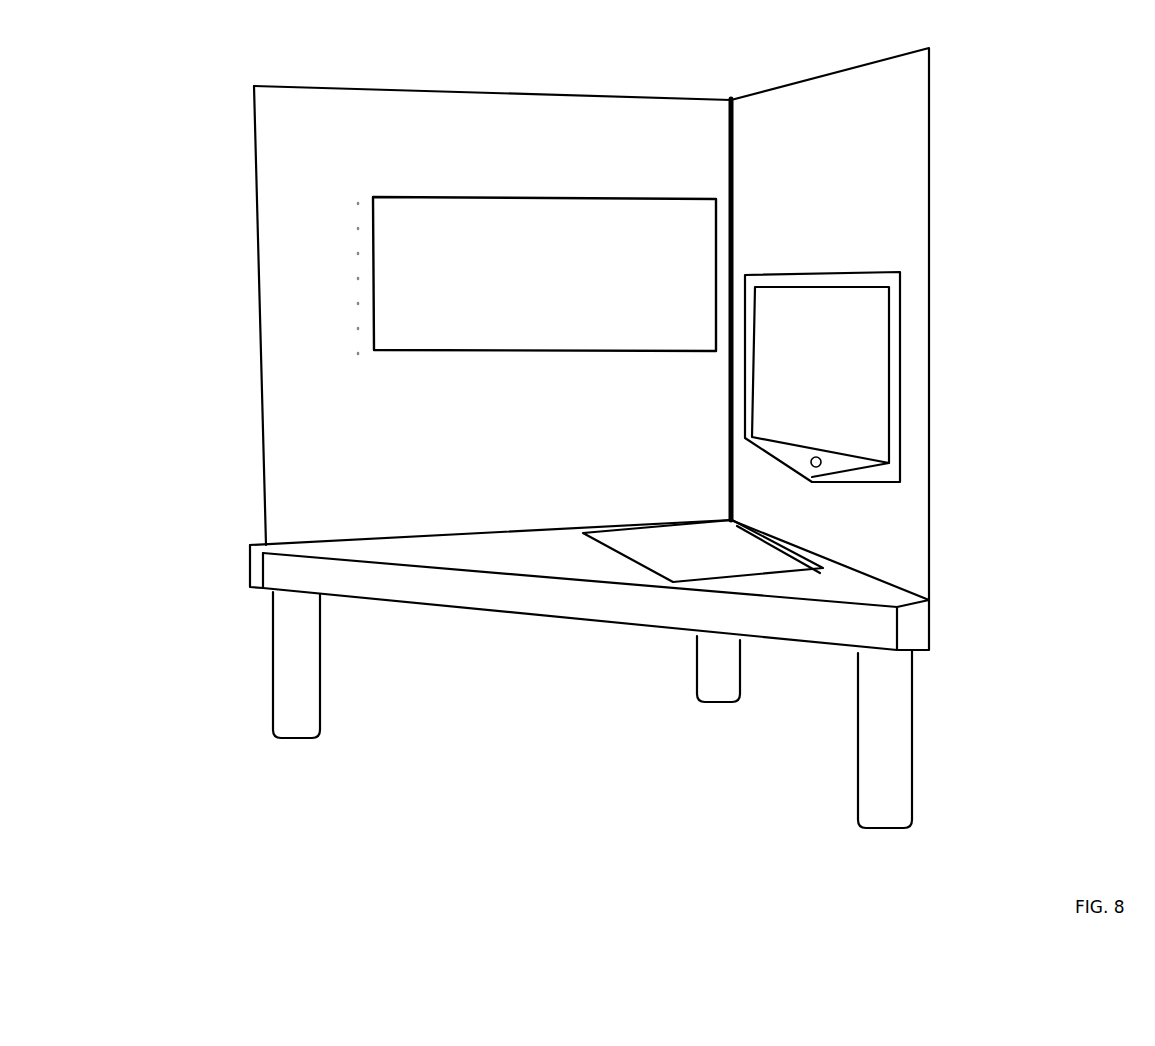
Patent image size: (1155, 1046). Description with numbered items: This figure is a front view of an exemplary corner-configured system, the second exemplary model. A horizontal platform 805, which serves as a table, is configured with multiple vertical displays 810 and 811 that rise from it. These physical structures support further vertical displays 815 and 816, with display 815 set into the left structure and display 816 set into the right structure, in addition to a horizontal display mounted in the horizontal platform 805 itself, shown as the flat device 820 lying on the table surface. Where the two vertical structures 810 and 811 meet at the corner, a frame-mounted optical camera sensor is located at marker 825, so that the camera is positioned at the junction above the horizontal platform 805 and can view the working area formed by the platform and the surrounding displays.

The horizontal platform 805 is at (250, 548).
The vertical display 810 is at (285, 398).
The vertical display 811 is at (897, 528).
The vertical display 815 is at (438, 241).
The vertical display 816 is at (862, 341).
The input device on table surface 820 is at (637, 540).
The frame-mounted optical camera sensor 825 is at (726, 95).